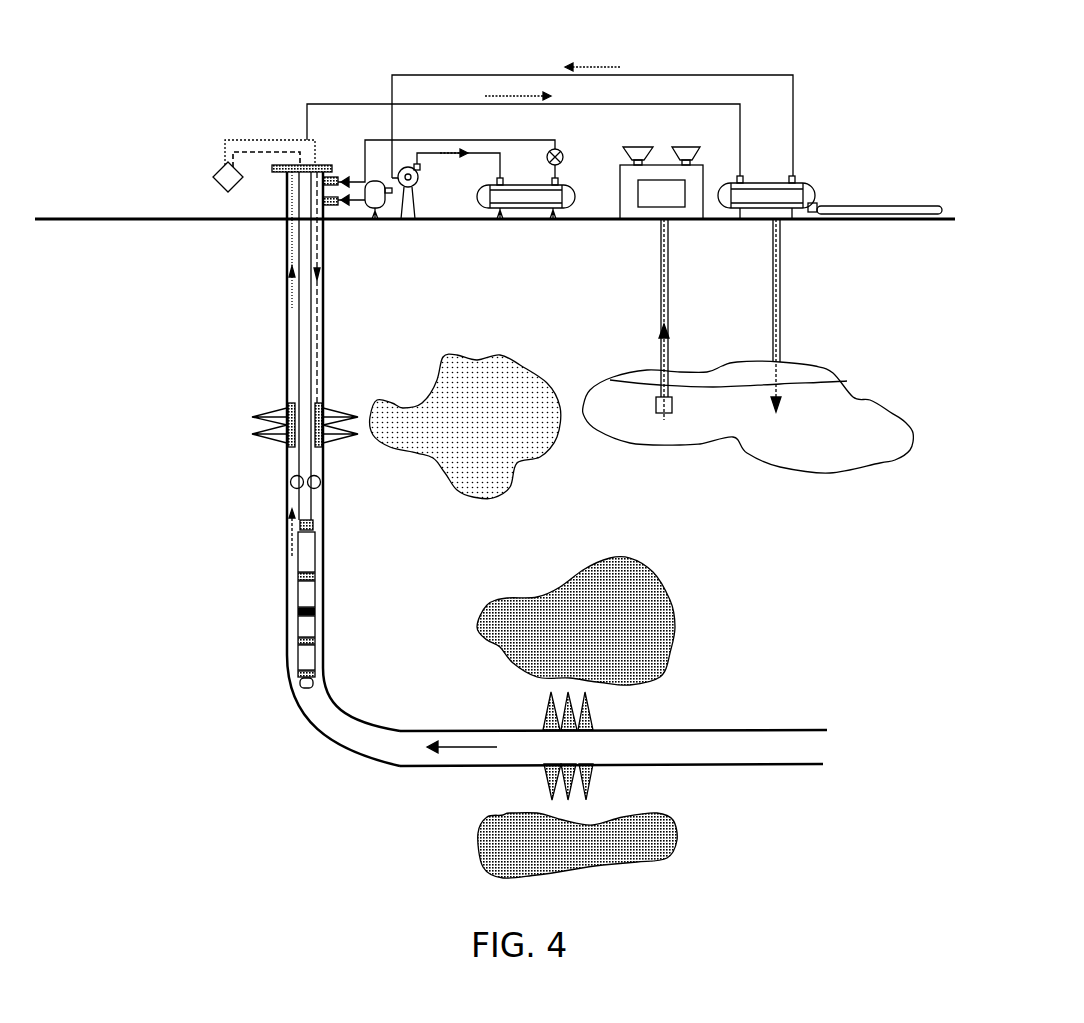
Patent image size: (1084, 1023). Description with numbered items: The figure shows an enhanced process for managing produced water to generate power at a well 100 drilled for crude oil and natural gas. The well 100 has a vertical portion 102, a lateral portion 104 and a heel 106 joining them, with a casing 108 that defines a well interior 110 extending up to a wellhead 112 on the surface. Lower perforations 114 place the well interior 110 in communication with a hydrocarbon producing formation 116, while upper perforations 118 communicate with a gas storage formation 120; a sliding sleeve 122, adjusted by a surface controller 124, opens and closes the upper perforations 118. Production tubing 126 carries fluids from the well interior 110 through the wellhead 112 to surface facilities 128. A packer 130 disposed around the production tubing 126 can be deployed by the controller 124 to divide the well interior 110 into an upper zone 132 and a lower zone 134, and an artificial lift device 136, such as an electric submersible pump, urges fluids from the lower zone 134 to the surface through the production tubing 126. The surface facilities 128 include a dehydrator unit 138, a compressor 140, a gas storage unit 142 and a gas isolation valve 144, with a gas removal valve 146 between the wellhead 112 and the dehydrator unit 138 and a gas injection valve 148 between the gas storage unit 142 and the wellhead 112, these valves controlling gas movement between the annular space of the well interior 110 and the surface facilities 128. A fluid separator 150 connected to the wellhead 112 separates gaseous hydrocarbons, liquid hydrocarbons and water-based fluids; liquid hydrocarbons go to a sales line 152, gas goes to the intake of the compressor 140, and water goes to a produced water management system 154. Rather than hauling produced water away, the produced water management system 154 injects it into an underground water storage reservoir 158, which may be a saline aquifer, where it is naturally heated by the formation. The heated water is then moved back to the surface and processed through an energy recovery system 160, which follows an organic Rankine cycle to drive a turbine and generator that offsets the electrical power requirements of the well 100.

The well 100 is at (162, 199).
The vertical portion 102 is at (283, 238).
The lateral portion 104 is at (480, 730).
The heel 106 is at (313, 733).
The casing 108 is at (325, 557).
The well interior 110 is at (313, 509).
The wellhead 112 is at (293, 165).
The lower perforations 114 is at (592, 725).
The hydrocarbon producing formation 116 is at (606, 641).
The upper perforations 118 is at (283, 438).
The gas storage formation 120 is at (476, 429).
The sliding sleeve 122 is at (287, 393).
The controller 124 is at (223, 170).
The production tubing 126 is at (318, 343).
The surface facilities 128 is at (426, 48).
The packer 130 is at (290, 487).
The upper zone 132 is at (287, 298).
The lower zone 134 is at (292, 565).
The artificial lift device 136 is at (297, 642).
The dehydrator unit 138 is at (387, 207).
The compressor 140 is at (413, 183).
The gas storage unit 142 is at (533, 207).
The gas isolation valve 144 is at (560, 163).
The gas removal valve 146 is at (348, 205).
The gas injection valve 148 is at (350, 179).
The fluid separator 150 is at (860, 187).
The sales line 152 is at (857, 213).
The produced water management system 154 is at (770, 237).
The underground water storage reservoir 158 is at (848, 439).
The energy recovery system 160 is at (677, 203).